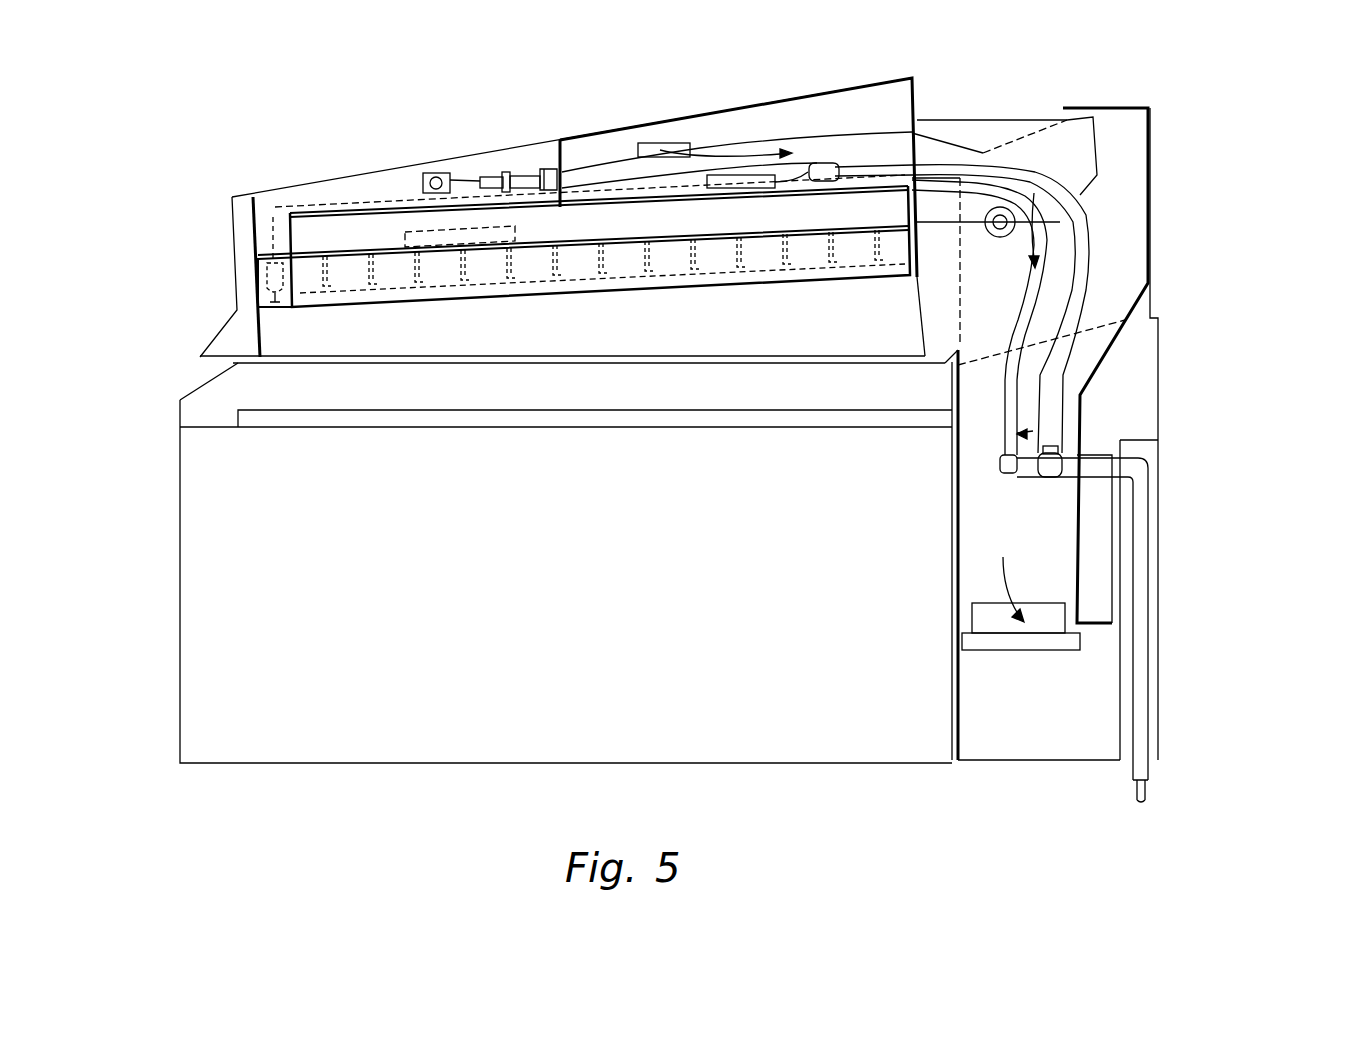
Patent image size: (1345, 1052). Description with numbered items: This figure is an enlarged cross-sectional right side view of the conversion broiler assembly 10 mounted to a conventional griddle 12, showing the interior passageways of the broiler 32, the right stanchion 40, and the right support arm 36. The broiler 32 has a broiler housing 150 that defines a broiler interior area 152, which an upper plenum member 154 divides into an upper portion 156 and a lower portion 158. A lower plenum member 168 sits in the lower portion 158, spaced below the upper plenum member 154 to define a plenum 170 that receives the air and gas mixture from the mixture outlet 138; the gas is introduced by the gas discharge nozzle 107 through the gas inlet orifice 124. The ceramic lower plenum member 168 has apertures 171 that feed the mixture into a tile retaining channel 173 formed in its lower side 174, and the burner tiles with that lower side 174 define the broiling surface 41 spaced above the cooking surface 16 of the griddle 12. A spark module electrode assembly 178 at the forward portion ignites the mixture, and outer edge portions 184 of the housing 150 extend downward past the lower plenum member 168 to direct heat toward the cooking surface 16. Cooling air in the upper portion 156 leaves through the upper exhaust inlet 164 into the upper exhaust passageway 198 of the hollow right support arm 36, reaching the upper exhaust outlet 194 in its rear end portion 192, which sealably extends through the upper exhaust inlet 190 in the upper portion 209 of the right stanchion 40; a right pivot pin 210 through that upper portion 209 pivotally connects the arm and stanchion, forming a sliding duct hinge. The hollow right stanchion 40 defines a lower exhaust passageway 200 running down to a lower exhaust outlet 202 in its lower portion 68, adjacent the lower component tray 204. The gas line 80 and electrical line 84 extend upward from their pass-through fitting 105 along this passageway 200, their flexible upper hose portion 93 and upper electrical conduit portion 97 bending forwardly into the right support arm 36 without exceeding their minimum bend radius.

The conversion broiler assembly 10 is at (1238, 86).
The griddle 12 is at (230, 503).
The cooking surface 16 is at (247, 408).
The broiler 32 is at (268, 188).
The right support arm 36 is at (937, 140).
The right stanchion 40 is at (1133, 123).
The broiling surface 41 is at (687, 292).
The lower portion 68 is at (980, 565).
The gas line 80 is at (1082, 392).
The electrical line 84 is at (1030, 434).
The upper hose portion 93 is at (590, 170).
The upper electrical conduit portion 97 is at (1065, 243).
The pass-through fitting 105 is at (464, 176).
The gas discharge nozzle 107 is at (445, 178).
The gas inlet orifice 124 is at (405, 230).
The air and gas mixture outlet 138 is at (403, 233).
The broiler housing 150 is at (300, 183).
The broiler interior area 152 is at (525, 158).
The upper plenum member 154 is at (347, 222).
The upper portion 156 is at (617, 150).
The lower portion 158 is at (608, 238).
The upper exhaust inlet 164 is at (680, 140).
The lower plenum member 168 is at (753, 260).
The plenum 170 is at (567, 224).
The apertures 171 is at (457, 280).
The tile retaining channel 173 is at (455, 285).
The lower side 174 is at (432, 305).
The spark module electrode assembly 178 is at (257, 278).
The outer edge portions 184 is at (310, 345).
The upper exhaust inlet 190 is at (1030, 137).
The rear end portion 192 is at (1047, 123).
The upper exhaust outlet 194 is at (1085, 193).
The upper exhaust passageway 198 is at (980, 138).
The lower exhaust passageway 200 is at (1055, 540).
The lower exhaust outlet 202 is at (975, 620).
The lower component tray 204 is at (997, 642).
The upper portion 209 is at (1118, 155).
The right pivot pin 210 is at (1000, 236).